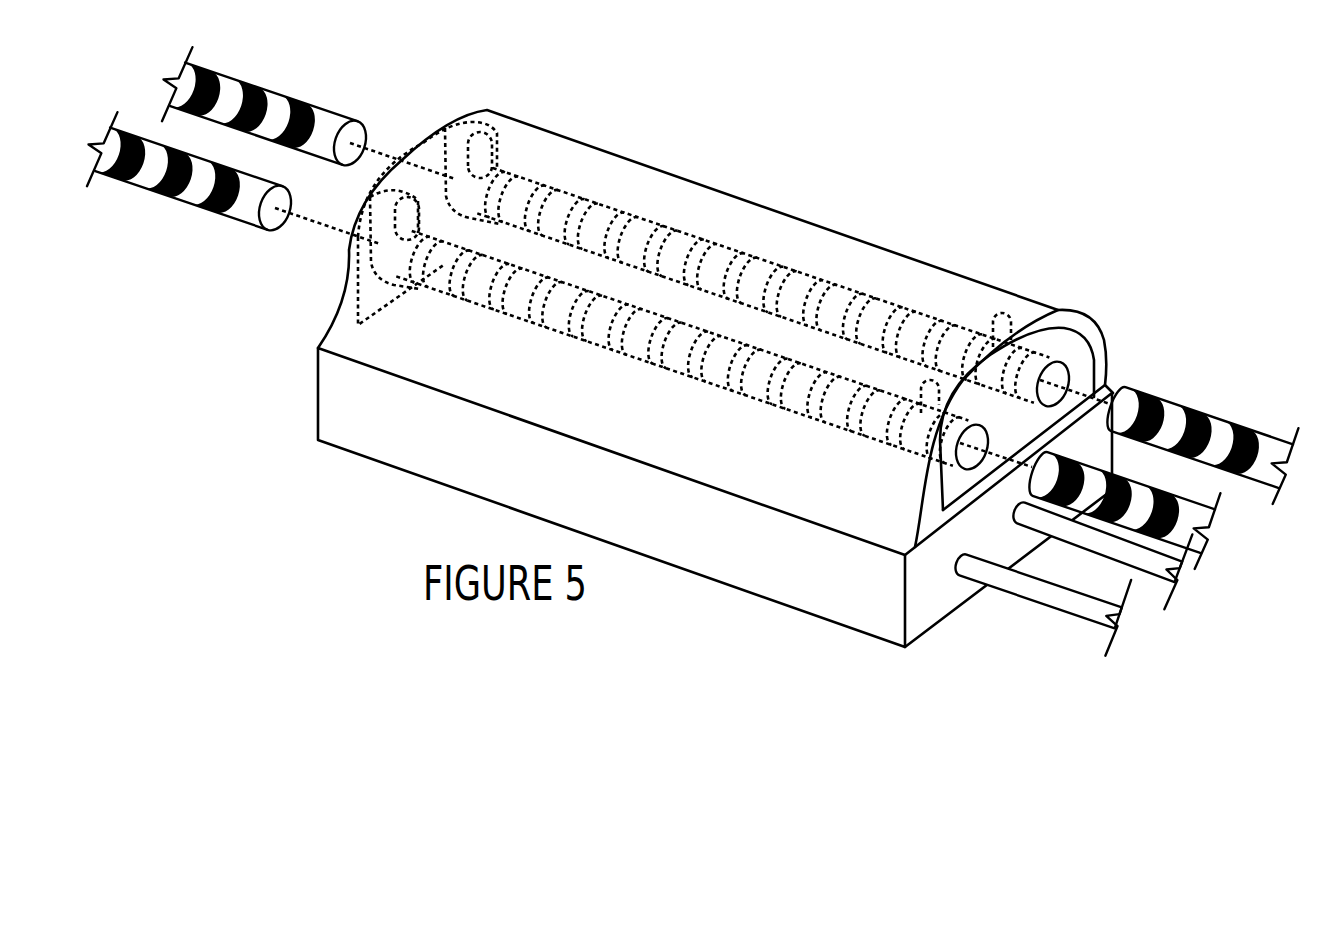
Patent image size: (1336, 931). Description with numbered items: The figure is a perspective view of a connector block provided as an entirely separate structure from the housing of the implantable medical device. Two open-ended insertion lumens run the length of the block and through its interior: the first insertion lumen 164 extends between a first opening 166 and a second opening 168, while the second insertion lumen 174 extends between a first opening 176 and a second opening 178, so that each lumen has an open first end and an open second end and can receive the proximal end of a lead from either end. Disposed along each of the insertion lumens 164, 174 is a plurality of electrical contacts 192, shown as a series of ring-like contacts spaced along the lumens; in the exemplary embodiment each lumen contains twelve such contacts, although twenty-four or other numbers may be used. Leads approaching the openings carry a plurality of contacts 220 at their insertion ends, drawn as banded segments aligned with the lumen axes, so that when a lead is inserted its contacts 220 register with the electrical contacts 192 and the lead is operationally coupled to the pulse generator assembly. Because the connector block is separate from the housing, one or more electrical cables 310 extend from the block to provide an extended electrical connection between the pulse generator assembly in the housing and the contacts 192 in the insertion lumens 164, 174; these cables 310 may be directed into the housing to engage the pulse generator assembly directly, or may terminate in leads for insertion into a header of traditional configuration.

The contacts 220 is at (208, 172).
The second opening 178 is at (450, 178).
The second insertion lumen 174 is at (706, 242).
The first insertion lumen 164 is at (615, 343).
The electrical contacts 192 is at (845, 287).
The second opening 168 is at (357, 250).
The first opening 176 is at (1056, 366).
The first opening 166 is at (968, 469).
The electrical cables 310 is at (1070, 531).